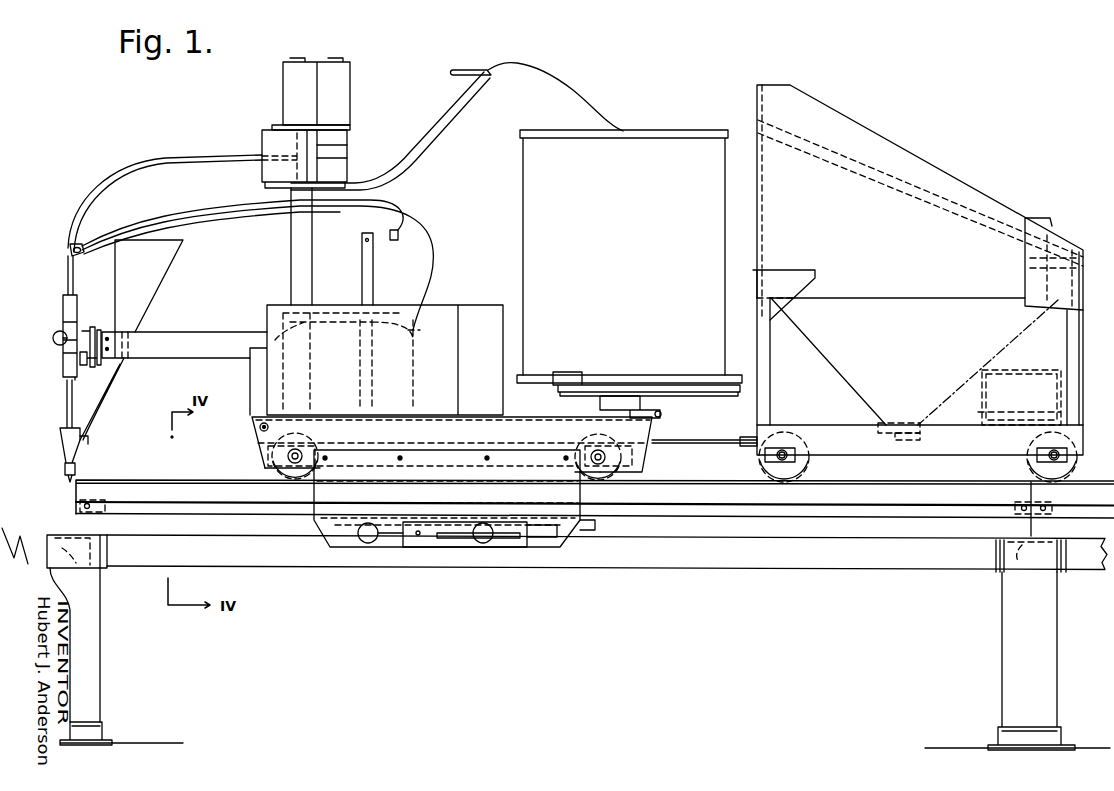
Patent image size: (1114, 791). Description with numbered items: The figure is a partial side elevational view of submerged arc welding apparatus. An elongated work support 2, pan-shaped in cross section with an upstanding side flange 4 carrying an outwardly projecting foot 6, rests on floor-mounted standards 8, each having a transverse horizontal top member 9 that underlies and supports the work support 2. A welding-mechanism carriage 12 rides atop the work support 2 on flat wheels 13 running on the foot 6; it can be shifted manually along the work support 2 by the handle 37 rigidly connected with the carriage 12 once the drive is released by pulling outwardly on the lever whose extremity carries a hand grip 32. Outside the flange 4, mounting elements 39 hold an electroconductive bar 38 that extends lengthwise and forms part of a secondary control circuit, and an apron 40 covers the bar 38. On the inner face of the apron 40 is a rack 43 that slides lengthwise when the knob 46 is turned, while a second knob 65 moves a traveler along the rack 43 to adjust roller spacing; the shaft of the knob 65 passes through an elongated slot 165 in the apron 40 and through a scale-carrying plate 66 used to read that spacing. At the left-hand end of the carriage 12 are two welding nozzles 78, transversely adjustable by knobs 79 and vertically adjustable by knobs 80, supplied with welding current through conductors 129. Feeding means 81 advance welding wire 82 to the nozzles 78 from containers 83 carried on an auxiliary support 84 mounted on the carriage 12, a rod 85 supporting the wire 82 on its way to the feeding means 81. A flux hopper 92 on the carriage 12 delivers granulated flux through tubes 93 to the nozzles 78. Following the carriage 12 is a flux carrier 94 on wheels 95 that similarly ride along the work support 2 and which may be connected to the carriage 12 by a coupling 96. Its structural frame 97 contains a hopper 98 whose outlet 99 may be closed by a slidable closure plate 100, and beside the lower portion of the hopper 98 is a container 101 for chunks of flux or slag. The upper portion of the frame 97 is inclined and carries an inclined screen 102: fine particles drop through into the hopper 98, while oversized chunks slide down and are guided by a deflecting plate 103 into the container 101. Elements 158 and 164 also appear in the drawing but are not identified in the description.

The work support 2 is at (750, 539).
The side flange 4 is at (190, 530).
The foot 6 is at (160, 464).
The standards 8 is at (93, 643).
The top member 9 is at (553, 558).
The carriage 12 is at (257, 447).
The flat wheels 13 is at (274, 469).
The hand grip 32 is at (672, 418).
The handle 37 is at (259, 427).
The bar 38 is at (860, 528).
The mounting elements 39 is at (100, 498).
The apron 40 is at (340, 550).
The rack 43 is at (590, 532).
The knob 46 is at (370, 546).
The knob 65 is at (483, 545).
The plate 66 is at (532, 548).
The welding nozzles 78 is at (60, 360).
The knobs 79 is at (88, 368).
The knobs 80 is at (52, 340).
The feeding means 81 is at (262, 143).
The welding wire 82 is at (578, 92).
The containers 83 is at (643, 251).
The auxiliary support 84 is at (700, 392).
The rod 85 is at (437, 130).
The flux hopper 92 is at (152, 294).
The tubes 93 is at (115, 397).
The flux carrier 94 is at (892, 138).
The wheels 95 is at (809, 464).
The coupling 96 is at (693, 442).
The structural frame 97 is at (766, 364).
The hopper 98 is at (830, 384).
The outlet 99 is at (904, 420).
The closure plate 100 is at (912, 440).
The container 101 is at (1024, 382).
The inclined screen 102 is at (964, 206).
The deflecting plate 103 is at (1061, 344).
The conductors 129 is at (195, 207).
The carriage housing 158 is at (484, 310).
The hose 164 is at (137, 166).
The elongated slot 165 is at (393, 550).